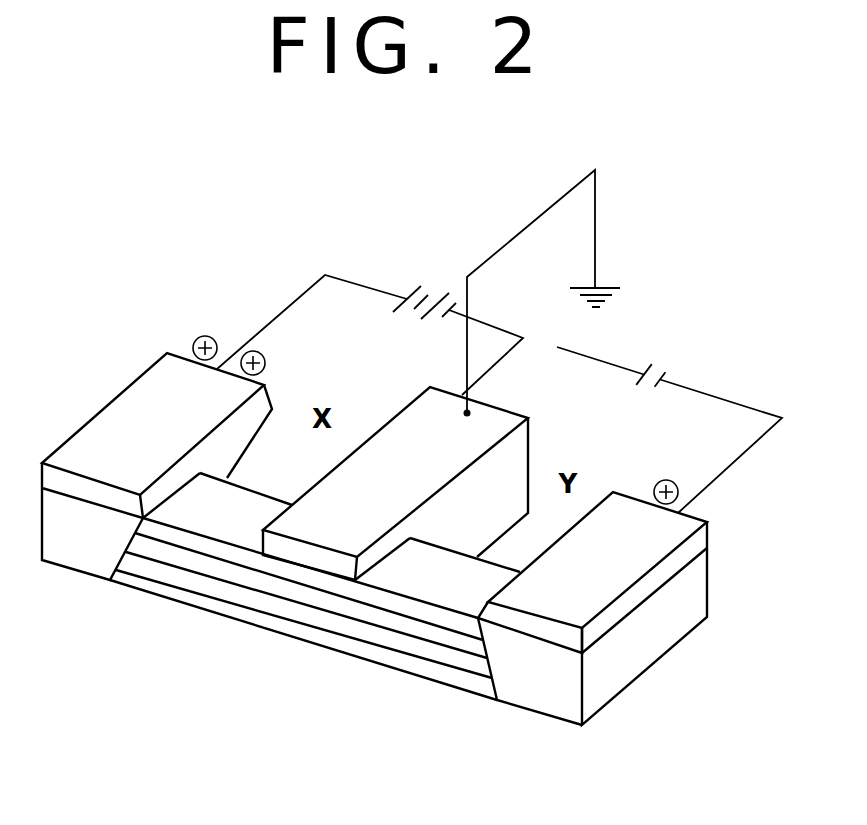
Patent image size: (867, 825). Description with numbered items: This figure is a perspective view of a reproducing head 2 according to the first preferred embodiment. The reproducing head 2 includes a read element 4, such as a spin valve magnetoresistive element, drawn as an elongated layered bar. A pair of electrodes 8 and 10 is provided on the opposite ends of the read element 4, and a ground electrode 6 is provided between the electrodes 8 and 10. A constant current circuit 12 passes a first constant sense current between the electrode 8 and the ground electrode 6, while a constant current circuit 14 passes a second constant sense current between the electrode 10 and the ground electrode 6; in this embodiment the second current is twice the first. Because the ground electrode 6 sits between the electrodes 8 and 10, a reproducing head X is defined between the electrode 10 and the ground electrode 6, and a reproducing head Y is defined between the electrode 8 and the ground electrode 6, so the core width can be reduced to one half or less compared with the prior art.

The reproducing head 2 is at (208, 625).
The read element 4 is at (339, 656).
The ground electrode 6 is at (410, 433).
The electrode 8 is at (632, 566).
The electrode 10 is at (110, 428).
The constant current circuit 12 is at (657, 370).
The constant current circuit 14 is at (430, 295).